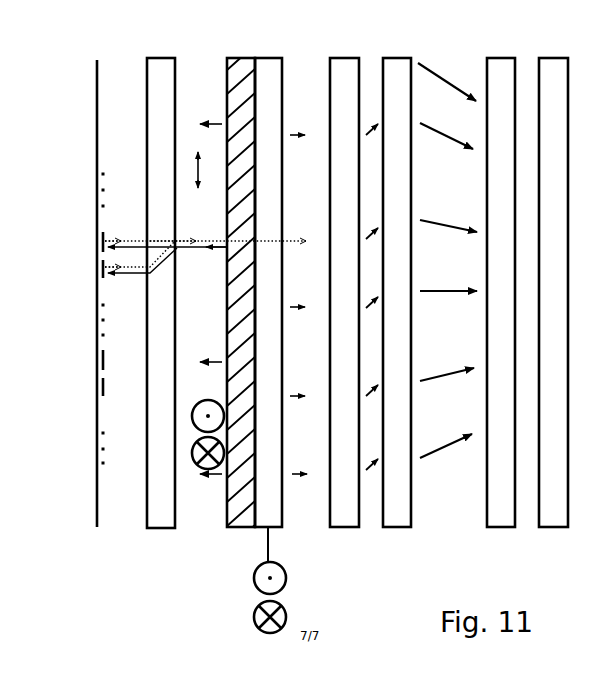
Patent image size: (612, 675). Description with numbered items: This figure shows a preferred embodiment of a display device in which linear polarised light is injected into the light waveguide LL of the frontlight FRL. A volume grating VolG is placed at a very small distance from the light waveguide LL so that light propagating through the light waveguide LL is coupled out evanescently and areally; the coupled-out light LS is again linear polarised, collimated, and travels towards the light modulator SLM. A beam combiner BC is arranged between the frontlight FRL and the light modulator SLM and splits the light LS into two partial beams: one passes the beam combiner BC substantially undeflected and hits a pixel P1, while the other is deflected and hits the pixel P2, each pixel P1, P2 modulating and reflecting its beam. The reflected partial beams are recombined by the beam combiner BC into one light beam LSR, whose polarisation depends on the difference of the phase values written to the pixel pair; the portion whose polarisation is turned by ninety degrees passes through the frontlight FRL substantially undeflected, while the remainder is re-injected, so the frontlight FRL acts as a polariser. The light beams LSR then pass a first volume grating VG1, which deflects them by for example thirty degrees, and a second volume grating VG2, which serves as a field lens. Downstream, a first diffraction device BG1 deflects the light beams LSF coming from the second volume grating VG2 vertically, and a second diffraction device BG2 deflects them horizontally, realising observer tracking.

The light modulator SLM is at (97, 92).
The beam combiner BC is at (158, 65).
The frontlight FRL is at (281, 45).
The light waveguide LL is at (265, 64).
The recombined light beam LSR is at (229, 241).
The coupled-out light LS is at (210, 478).
The volume grating VolG is at (236, 515).
The first volume grating VG1 is at (345, 62).
The second volume grating VG2 is at (395, 526).
The light beams from the second volume grating LSF is at (430, 69).
The first diffraction device BG1 is at (498, 62).
The second diffraction device BG2 is at (555, 526).
The pixel P1 is at (100, 242).
The pixel P2 is at (100, 268).